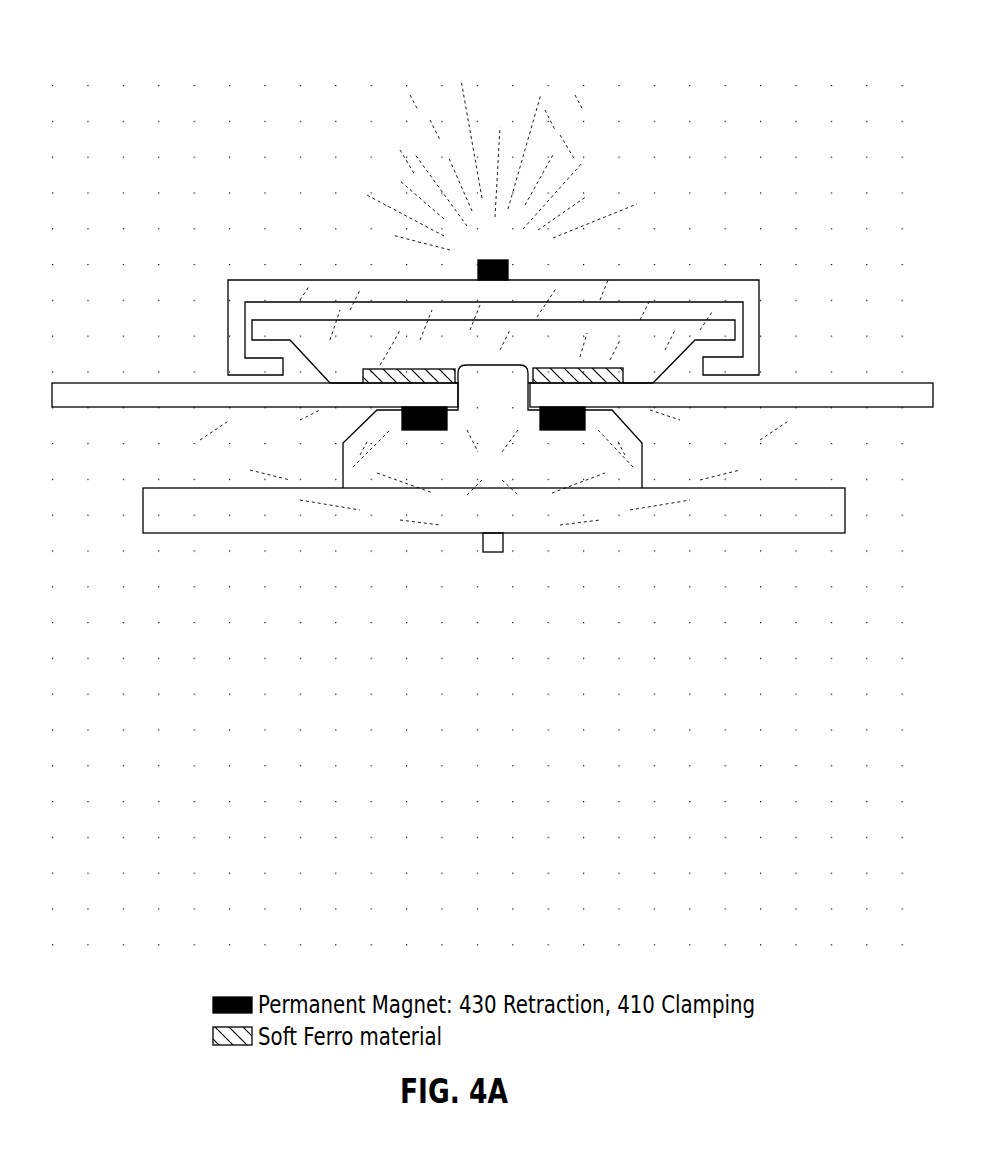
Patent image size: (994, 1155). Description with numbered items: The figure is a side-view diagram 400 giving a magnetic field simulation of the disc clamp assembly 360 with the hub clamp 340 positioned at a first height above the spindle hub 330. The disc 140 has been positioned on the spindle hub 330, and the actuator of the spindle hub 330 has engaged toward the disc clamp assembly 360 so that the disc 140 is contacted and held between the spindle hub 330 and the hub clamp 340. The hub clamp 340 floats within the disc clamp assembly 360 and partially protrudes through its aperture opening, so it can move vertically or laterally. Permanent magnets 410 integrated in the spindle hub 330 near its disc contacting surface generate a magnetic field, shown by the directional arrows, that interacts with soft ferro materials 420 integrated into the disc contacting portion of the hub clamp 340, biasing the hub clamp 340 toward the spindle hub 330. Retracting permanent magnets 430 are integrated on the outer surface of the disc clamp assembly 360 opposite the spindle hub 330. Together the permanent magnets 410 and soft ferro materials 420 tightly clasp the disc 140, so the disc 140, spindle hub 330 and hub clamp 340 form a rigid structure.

The diagram 400 is at (470, 39).
The disc 140 is at (72, 383).
The disc clamp assembly 360 is at (697, 280).
The hub clamp 340 is at (710, 320).
The soft ferro materials 420 is at (573, 368).
The retracting permanent magnets 430 is at (493, 260).
The permanent magnets 410 is at (400, 418).
The spindle hub 330 is at (644, 463).